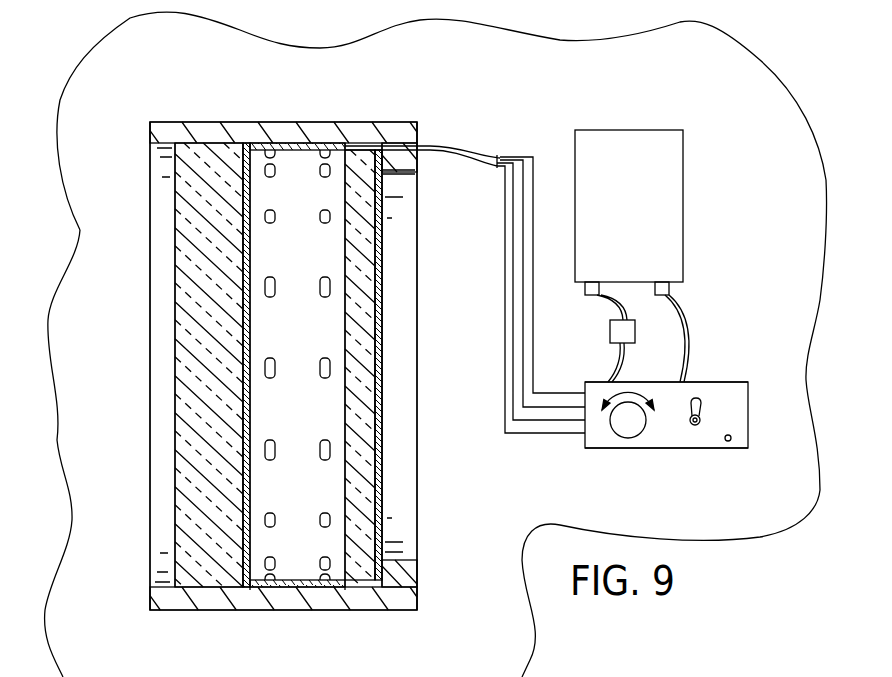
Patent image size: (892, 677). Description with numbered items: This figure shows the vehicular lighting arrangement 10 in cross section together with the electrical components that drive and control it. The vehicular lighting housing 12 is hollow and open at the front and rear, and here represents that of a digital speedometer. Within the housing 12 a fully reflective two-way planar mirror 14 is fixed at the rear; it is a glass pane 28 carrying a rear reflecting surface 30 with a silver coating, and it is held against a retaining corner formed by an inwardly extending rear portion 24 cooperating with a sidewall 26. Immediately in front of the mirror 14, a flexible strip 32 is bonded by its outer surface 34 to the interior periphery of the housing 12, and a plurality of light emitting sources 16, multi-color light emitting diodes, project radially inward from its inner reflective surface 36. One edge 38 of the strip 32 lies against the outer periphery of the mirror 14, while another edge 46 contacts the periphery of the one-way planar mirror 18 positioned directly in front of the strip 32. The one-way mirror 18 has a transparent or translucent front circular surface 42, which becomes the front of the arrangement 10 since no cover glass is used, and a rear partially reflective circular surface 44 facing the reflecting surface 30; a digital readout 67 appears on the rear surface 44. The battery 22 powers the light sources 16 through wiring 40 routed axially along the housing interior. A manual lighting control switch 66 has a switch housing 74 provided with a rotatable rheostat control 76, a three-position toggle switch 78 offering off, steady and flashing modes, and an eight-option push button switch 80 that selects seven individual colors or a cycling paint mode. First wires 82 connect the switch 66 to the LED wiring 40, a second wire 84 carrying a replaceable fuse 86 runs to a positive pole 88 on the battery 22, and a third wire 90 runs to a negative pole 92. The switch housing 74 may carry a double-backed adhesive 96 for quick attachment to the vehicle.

The vehicular lighting arrangement 10 is at (404, 112).
The vehicular lighting housing 12 is at (200, 118).
The two-way planar mirror 14 is at (386, 270).
The light emitting sources 16 is at (325, 297).
The one-way planar mirror 18 is at (240, 205).
The battery 22 is at (648, 130).
The inwardly extending rear portion 24 is at (410, 172).
The sidewall 26 is at (290, 130).
The glass pane 28 is at (376, 390).
The rear reflecting surface 30 is at (380, 350).
The flexible strip 32 is at (315, 478).
The outer surface 34 is at (262, 143).
The inner reflective surface 36 is at (320, 408).
The edge 38 is at (345, 312).
The wiring 40 is at (432, 146).
The front circular surface 42 is at (175, 448).
The rear partially reflective circular surface 44 is at (243, 490).
The edge 46 is at (258, 248).
The lighting control switch 66 is at (748, 390).
The digital readout 67 is at (242, 365).
The switch housing 74 is at (720, 382).
The rotatable rheostat control 76 is at (630, 440).
The toggle switch 78 is at (699, 426).
The push button switch 80 is at (733, 438).
The first wires 82 is at (533, 322).
The second wire 84 is at (630, 362).
The replaceable fuse 86 is at (610, 331).
The positive pole 88 is at (598, 282).
The third wire 90 is at (700, 302).
The negative pole 92 is at (672, 282).
The double-backed adhesive 96 is at (730, 448).